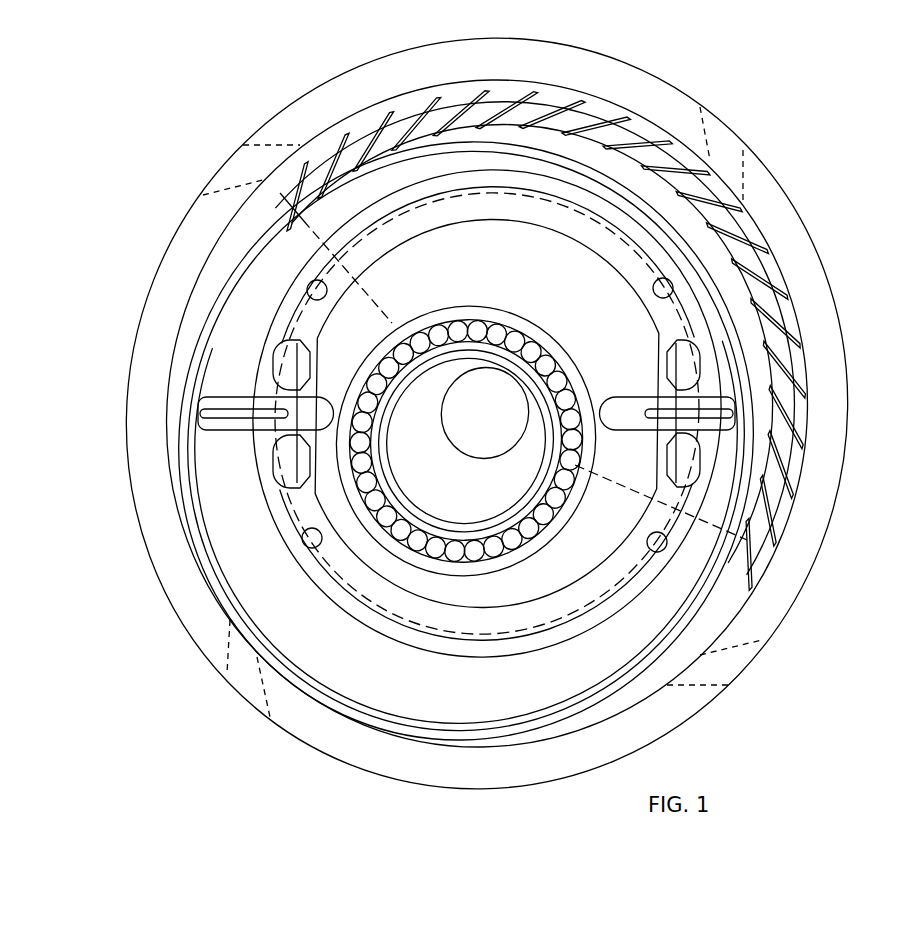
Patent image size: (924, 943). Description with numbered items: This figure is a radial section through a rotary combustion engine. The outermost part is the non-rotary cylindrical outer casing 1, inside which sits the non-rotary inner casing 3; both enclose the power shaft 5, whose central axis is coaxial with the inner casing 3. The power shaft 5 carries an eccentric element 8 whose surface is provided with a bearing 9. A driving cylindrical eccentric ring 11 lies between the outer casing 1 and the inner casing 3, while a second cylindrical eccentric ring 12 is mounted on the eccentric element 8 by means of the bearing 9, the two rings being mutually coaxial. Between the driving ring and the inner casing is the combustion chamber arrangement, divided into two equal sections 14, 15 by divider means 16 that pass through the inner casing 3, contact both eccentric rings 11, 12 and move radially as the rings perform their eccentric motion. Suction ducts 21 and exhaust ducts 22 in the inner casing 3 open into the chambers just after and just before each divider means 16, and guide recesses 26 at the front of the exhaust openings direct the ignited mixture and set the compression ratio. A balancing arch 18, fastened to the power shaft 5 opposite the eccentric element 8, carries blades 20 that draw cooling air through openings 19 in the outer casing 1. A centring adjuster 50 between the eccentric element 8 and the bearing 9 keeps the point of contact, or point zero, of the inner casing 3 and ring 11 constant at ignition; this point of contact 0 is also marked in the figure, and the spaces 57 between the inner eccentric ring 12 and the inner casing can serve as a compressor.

The non-rotary cylindrical outer casing 1 is at (150, 290).
The non-rotary inner casing 3 is at (423, 645).
The power shaft 5 is at (470, 438).
The eccentric element 8 is at (490, 508).
The bearing 9 is at (445, 330).
The driving cylindrical eccentric ring 11 is at (383, 167).
The second cylindrical eccentric ring 12 is at (418, 322).
The combustion chamber section 14 is at (237, 330).
The combustion chamber section 15 is at (235, 520).
The divider means 16 is at (231, 404).
The balancing arch 18 is at (777, 273).
The openings 19 is at (237, 163).
The blades 20 is at (793, 307).
The suction ducts 21 is at (293, 366).
The exhaust ducts 22 is at (682, 366).
The guide recesses 26 is at (687, 287).
The centring adjuster 50 is at (485, 350).
The spaces 57 is at (566, 287).
The ring 0 is at (637, 220).